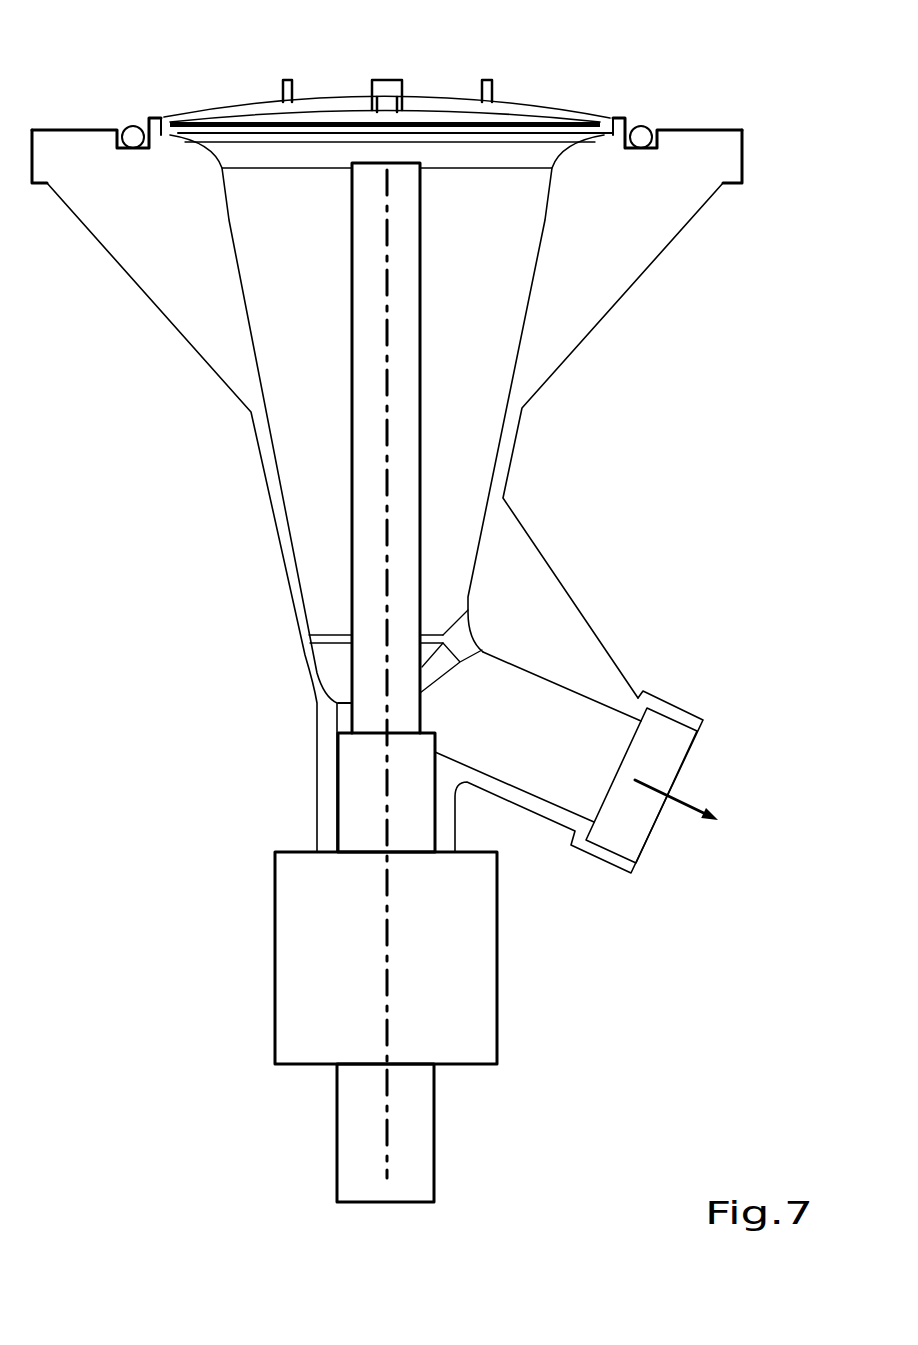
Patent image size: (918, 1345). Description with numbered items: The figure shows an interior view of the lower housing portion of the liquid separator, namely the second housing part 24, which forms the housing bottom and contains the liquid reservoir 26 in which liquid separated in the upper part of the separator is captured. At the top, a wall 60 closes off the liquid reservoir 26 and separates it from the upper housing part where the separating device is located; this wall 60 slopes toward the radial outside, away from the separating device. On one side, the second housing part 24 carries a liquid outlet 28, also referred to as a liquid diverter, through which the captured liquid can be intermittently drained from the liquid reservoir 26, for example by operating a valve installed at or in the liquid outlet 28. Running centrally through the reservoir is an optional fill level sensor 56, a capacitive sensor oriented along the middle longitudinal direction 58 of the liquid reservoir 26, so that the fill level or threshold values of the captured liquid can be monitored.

The second housing part 24 is at (277, 519).
The liquid reservoir 26 is at (277, 463).
The liquid outlet 28 is at (679, 751).
The fill level sensor 56 is at (339, 585).
The middle longitudinal direction 58 is at (388, 1118).
The wall 60 is at (520, 118).